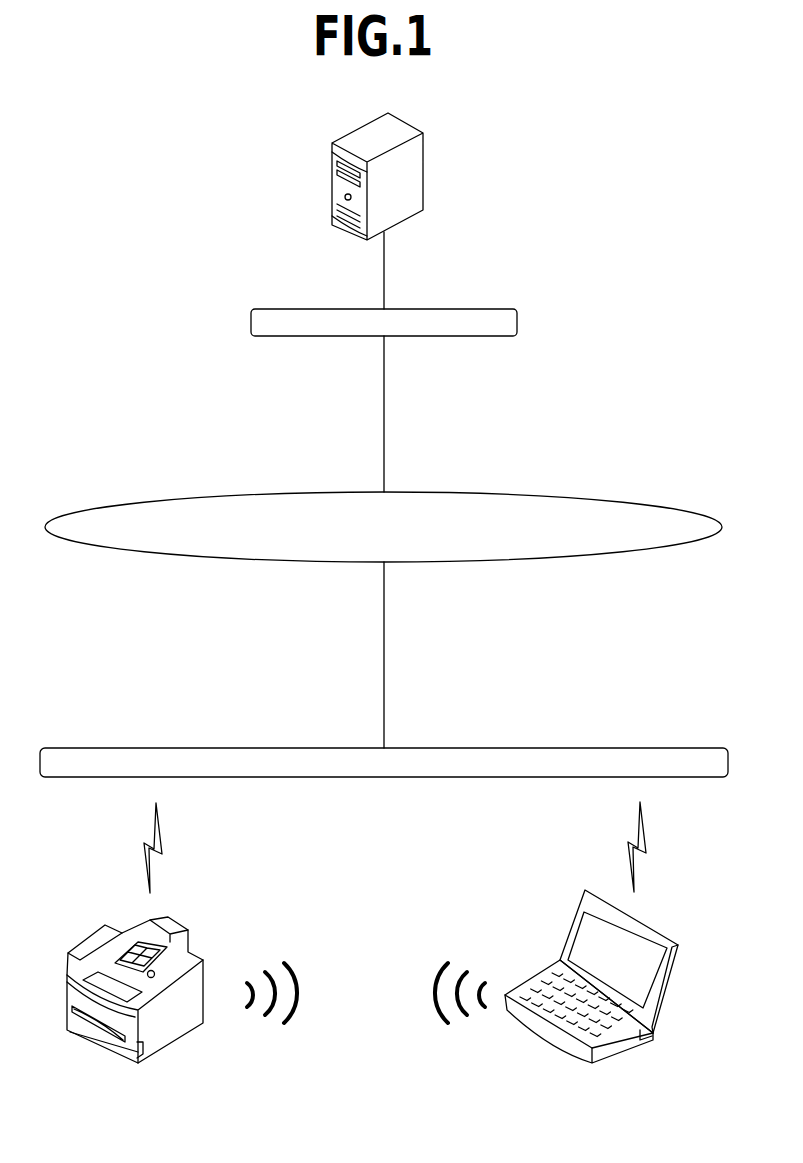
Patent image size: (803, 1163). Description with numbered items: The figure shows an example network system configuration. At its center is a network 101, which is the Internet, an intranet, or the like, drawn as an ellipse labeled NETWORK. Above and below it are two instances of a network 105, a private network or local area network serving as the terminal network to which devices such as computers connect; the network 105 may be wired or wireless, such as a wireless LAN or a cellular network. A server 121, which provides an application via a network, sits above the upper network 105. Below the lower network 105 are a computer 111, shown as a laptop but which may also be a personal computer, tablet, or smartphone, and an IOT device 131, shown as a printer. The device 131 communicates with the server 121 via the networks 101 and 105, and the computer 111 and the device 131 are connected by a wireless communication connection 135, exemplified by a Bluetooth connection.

The network 101 is at (263, 492).
The network 105 is at (519, 322).
The computer 111 is at (548, 1048).
The server 121 is at (330, 192).
The IOT device 131 is at (100, 1055).
The wireless communication connection 135 is at (288, 963).